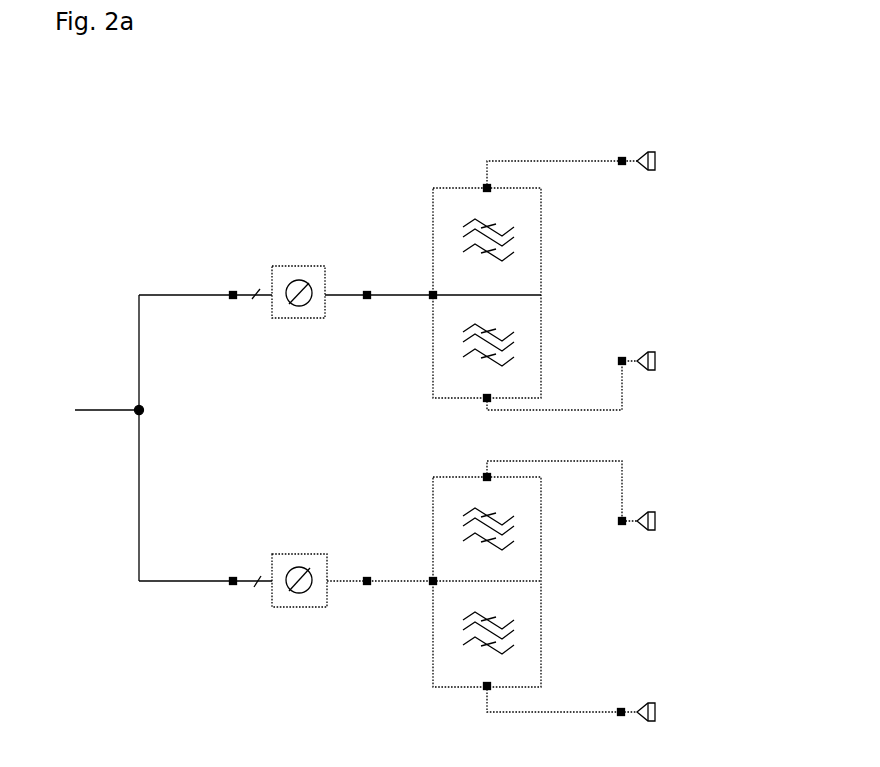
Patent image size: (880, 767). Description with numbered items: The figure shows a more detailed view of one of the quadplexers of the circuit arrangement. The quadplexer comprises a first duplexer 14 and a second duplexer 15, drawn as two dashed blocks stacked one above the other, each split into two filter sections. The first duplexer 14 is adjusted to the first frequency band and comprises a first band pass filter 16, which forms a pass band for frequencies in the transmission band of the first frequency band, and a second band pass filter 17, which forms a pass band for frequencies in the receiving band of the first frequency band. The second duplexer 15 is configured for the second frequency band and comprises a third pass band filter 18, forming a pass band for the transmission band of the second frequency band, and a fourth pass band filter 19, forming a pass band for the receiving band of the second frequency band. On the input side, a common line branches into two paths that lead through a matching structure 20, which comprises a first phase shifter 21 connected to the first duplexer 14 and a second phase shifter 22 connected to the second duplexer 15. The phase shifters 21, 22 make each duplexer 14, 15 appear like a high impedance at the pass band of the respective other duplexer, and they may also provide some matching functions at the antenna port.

The first duplexer 14 is at (422, 216).
The second duplexer 15 is at (420, 515).
The first band pass filter 16 is at (655, 163).
The second band pass filter 17 is at (655, 361).
The third pass band filter 18 is at (655, 522).
The fourth pass band filter 19 is at (655, 713).
The matching structure 20 is at (300, 308).
The first phase shifter 21 is at (295, 278).
The second phase shifter 22 is at (313, 598).